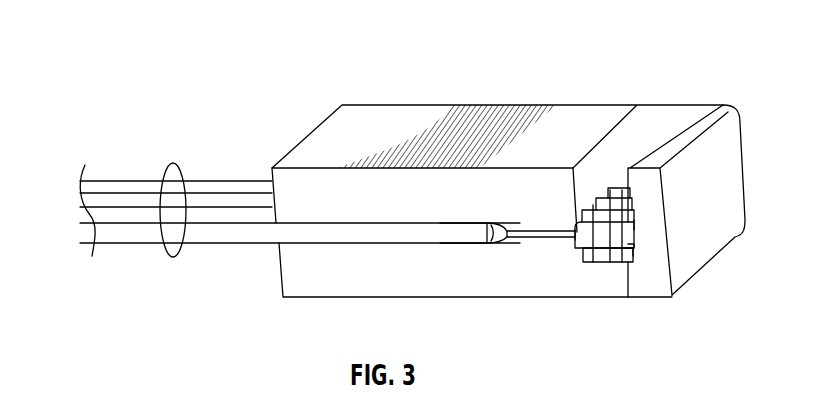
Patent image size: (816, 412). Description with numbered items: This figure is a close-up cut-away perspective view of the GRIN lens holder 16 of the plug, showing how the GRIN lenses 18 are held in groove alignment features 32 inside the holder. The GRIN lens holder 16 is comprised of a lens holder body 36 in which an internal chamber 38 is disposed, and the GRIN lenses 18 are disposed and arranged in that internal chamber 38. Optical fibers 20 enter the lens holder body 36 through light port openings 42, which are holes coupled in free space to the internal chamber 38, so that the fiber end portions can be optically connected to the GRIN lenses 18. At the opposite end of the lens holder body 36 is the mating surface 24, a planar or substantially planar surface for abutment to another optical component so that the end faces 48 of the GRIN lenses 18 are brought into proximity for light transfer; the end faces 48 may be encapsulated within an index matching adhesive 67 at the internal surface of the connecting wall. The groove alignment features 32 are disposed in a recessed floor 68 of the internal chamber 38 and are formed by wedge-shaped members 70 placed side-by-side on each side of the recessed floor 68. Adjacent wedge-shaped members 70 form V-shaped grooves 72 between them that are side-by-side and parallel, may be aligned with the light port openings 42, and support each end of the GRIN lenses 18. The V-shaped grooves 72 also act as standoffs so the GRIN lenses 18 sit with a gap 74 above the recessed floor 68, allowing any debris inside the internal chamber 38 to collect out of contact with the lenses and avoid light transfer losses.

The GRIN lens holder 16 is at (383, 73).
The GRIN lenses 18 is at (622, 263).
The optical fibers 20 is at (172, 257).
The mating surface 24 is at (728, 152).
The groove alignment features 32 is at (575, 256).
The lens holder body 36 is at (426, 117).
The internal chamber 38 is at (506, 228).
The light port openings 42 is at (265, 150).
The end faces 48 is at (627, 187).
The index matching adhesive 67 is at (635, 250).
The recessed floor 68 is at (467, 252).
The wedge-shaped members 70 is at (603, 189).
The V-shaped grooves 72 is at (614, 184).
The gap 74 is at (631, 258).